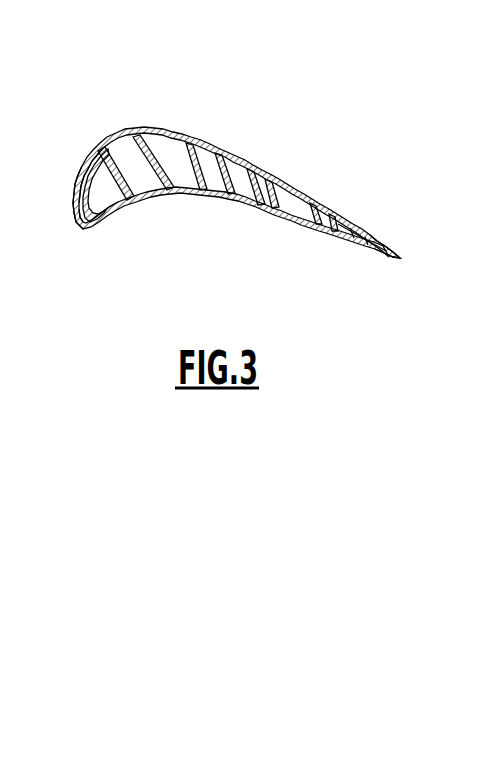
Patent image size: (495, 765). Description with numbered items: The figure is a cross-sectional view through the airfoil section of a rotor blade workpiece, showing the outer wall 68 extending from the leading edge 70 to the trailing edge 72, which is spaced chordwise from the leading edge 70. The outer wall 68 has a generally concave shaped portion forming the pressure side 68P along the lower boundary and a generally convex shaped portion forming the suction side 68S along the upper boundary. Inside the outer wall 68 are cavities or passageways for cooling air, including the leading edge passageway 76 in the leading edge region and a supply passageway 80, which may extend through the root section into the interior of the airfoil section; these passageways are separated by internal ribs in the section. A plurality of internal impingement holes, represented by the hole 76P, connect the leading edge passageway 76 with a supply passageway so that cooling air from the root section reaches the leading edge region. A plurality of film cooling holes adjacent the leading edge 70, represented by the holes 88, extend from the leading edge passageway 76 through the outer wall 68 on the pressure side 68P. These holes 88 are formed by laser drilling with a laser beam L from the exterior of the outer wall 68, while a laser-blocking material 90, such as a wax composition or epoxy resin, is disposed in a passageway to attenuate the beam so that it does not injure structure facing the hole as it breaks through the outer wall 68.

The outer wall 68 is at (240, 146).
The suction side 68S is at (188, 134).
The pressure side 68P is at (220, 198).
The leading edge 70 is at (72, 230).
The trailing edge 72 is at (409, 262).
The leading edge passageway 76 is at (78, 192).
The impingement hole 76P is at (90, 166).
The supply passageway 80 is at (110, 188).
The film cooling holes 88 is at (88, 233).
The laser-blocking material 90 is at (93, 196).
The laser beam L is at (96, 236).